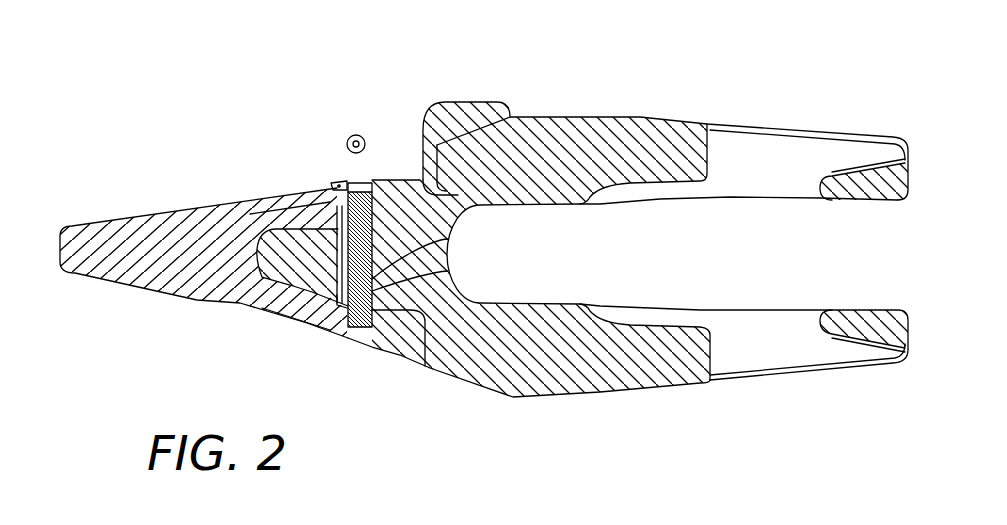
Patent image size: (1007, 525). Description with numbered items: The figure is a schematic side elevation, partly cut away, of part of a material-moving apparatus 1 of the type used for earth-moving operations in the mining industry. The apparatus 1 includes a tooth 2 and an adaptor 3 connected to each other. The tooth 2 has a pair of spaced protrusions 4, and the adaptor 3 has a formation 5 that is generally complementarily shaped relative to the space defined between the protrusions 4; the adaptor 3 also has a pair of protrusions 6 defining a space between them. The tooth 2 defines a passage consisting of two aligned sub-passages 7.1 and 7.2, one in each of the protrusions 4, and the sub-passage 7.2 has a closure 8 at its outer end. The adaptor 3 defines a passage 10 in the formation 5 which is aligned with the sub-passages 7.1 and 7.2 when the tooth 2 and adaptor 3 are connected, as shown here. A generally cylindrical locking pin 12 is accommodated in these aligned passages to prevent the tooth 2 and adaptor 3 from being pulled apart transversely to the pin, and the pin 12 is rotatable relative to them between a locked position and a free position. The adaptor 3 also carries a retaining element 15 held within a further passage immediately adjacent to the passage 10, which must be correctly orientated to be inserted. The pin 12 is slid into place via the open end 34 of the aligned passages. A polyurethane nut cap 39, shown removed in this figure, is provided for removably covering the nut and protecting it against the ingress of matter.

The material-moving apparatus 1 is at (263, 106).
The tooth 2 is at (150, 212).
The adaptor 3 is at (610, 113).
The protrusions 4 is at (300, 200).
The formation 5 is at (277, 267).
The protrusions 6 is at (678, 140).
The sub-passage 7.1 is at (335, 179).
The sub-passage 7.2 is at (333, 324).
The closure 8 is at (362, 333).
The passage 10 is at (448, 239).
The locking pin 12 is at (448, 271).
The retaining element 15 is at (338, 246).
The open end 34 is at (371, 172).
The nut cap 39 is at (351, 134).